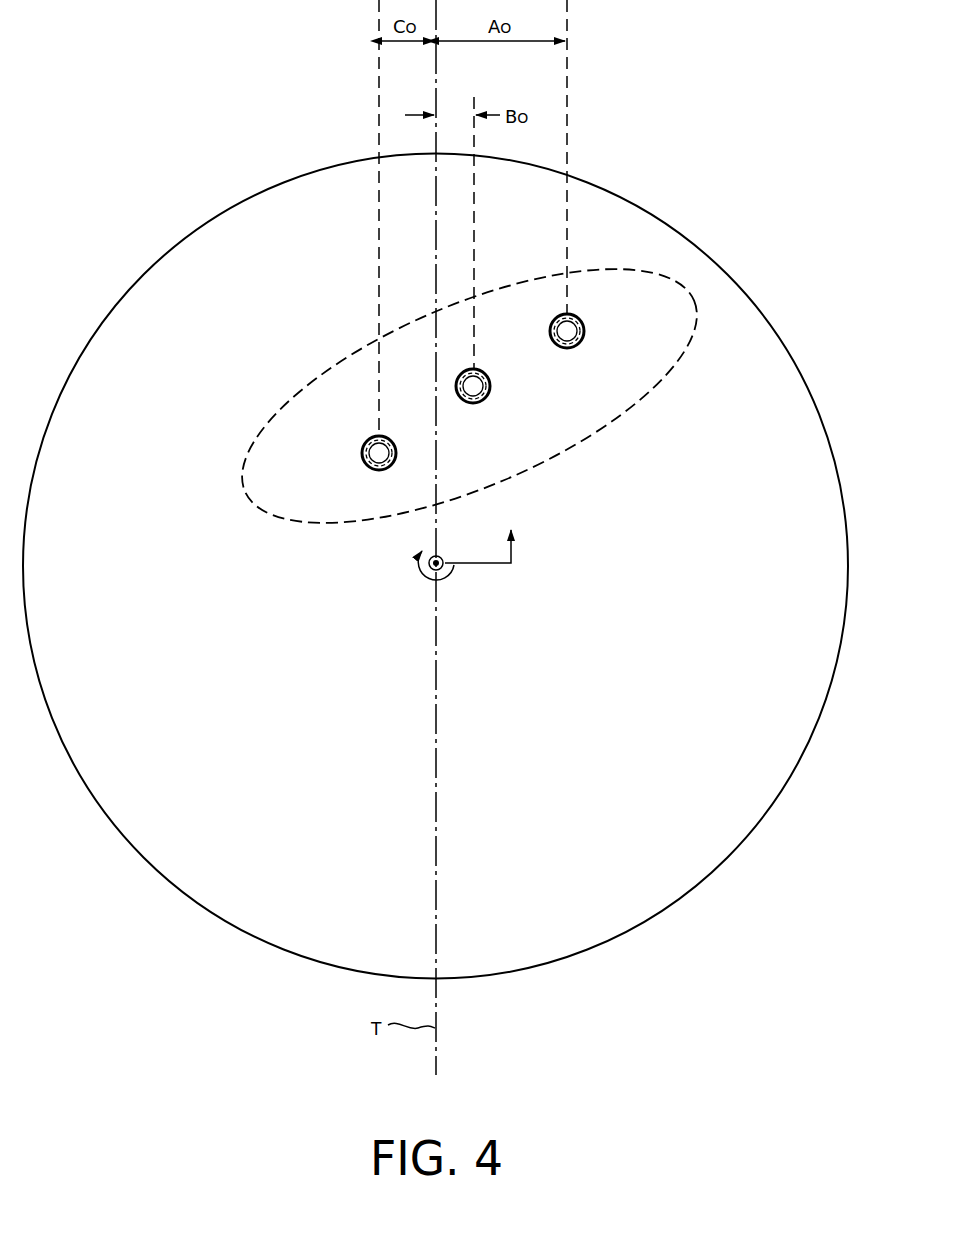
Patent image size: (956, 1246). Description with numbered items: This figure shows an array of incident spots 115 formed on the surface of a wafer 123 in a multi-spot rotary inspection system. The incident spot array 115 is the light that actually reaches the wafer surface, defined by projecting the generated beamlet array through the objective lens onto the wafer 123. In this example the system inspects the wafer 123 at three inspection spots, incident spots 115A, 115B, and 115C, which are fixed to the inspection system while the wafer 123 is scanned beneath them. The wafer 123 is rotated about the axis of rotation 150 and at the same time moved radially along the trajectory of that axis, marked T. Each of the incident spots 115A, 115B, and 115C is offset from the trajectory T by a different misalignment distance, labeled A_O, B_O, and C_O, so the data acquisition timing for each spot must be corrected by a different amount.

The incident spot array 115 is at (244, 496).
The incident spot 115A is at (585, 328).
The incident spot 115B is at (492, 384).
The incident spot 115C is at (361, 456).
The wafer 123 is at (755, 300).
The axis of rotation 150 is at (428, 568).